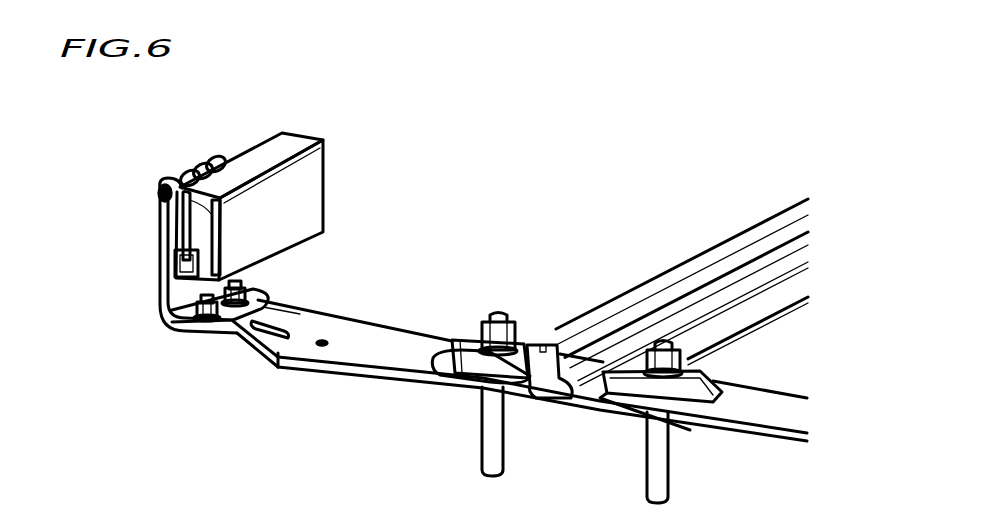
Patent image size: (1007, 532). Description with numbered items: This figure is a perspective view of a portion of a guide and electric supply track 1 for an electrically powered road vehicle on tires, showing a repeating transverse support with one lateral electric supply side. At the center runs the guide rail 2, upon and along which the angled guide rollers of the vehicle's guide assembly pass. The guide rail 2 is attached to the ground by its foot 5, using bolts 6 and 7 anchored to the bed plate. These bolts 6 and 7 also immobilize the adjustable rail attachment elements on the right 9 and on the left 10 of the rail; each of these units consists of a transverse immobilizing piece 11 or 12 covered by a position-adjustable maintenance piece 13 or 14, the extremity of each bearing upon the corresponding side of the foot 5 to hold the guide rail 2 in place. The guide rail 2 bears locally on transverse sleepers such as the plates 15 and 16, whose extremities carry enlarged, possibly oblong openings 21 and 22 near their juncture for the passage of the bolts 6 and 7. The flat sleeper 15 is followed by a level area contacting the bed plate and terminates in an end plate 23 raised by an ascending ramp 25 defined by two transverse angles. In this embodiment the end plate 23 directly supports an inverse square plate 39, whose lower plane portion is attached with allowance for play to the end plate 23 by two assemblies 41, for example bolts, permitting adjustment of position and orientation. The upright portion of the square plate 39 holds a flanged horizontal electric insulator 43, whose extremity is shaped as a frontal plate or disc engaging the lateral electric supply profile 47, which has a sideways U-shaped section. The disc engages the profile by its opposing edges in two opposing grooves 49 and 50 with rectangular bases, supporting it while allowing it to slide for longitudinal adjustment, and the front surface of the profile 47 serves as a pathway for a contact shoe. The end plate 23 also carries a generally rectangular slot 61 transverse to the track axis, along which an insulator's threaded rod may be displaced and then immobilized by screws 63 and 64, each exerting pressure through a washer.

The guide and electric supply track 1 is at (658, 108).
The guide rail 2 is at (744, 240).
The foot 5 is at (540, 390).
The bolt 6 is at (490, 452).
The bolt 7 is at (660, 467).
The rail attachment element 9 is at (450, 324).
The rail attachment element 10 is at (714, 360).
The transverse immobilizing piece 11 is at (460, 368).
The transverse immobilizing piece 12 is at (688, 382).
The maintenance piece 13 is at (470, 342).
The maintenance piece 14 is at (652, 425).
The sleeper 15 is at (363, 340).
The sleeper 16 is at (775, 408).
The enlarged opening 21 is at (430, 362).
The enlarged opening 22 is at (737, 381).
The end plate 23 is at (237, 345).
The ascending ramp 25 is at (300, 322).
The inverse square plate 39 is at (148, 235).
The assembly 41 is at (268, 278).
The flanged horizontal electric insulator 43 is at (222, 142).
The lateral electric supply profile 47 is at (285, 152).
The groove 49 is at (172, 283).
The groove 50 is at (178, 180).
The slot 61 is at (270, 340).
The screw 63 is at (182, 331).
The screw 64 is at (250, 270).